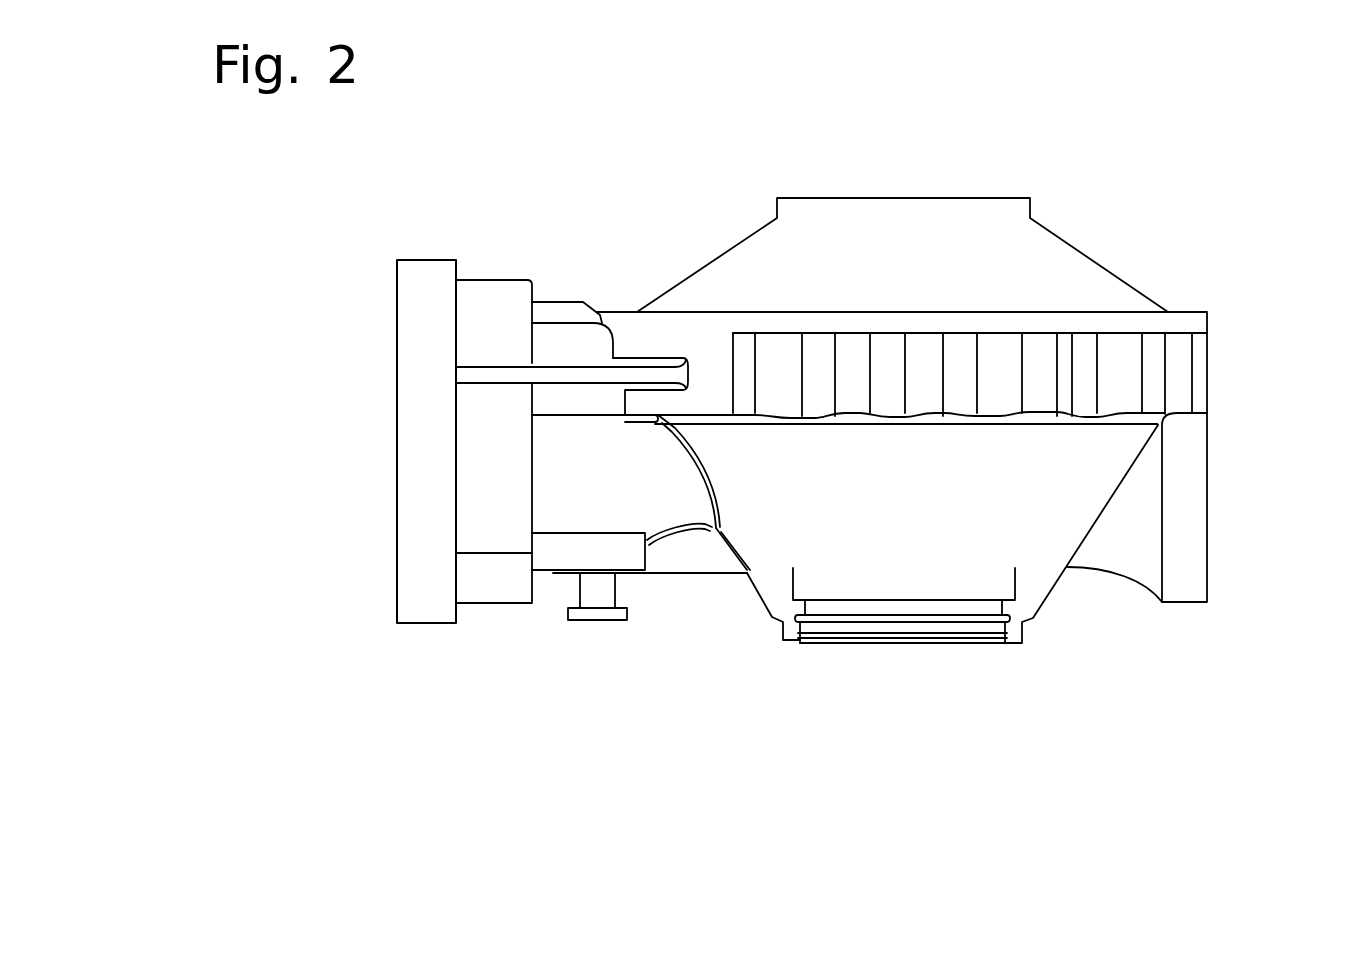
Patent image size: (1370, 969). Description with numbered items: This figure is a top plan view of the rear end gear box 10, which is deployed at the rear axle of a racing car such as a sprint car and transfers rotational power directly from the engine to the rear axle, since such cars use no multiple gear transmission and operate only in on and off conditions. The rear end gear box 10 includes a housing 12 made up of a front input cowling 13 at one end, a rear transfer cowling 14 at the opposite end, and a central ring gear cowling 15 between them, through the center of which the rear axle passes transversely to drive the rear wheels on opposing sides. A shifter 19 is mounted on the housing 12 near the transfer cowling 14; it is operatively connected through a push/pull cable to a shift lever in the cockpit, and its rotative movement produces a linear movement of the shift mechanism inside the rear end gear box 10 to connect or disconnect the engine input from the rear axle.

The rear end gear box 10 is at (565, 702).
The housing 12 is at (708, 295).
The front input cowling 13 is at (1190, 517).
The rear transfer cowling 14 is at (422, 421).
The central ring gear cowling 15 is at (1016, 338).
The shifter 19 is at (610, 620).